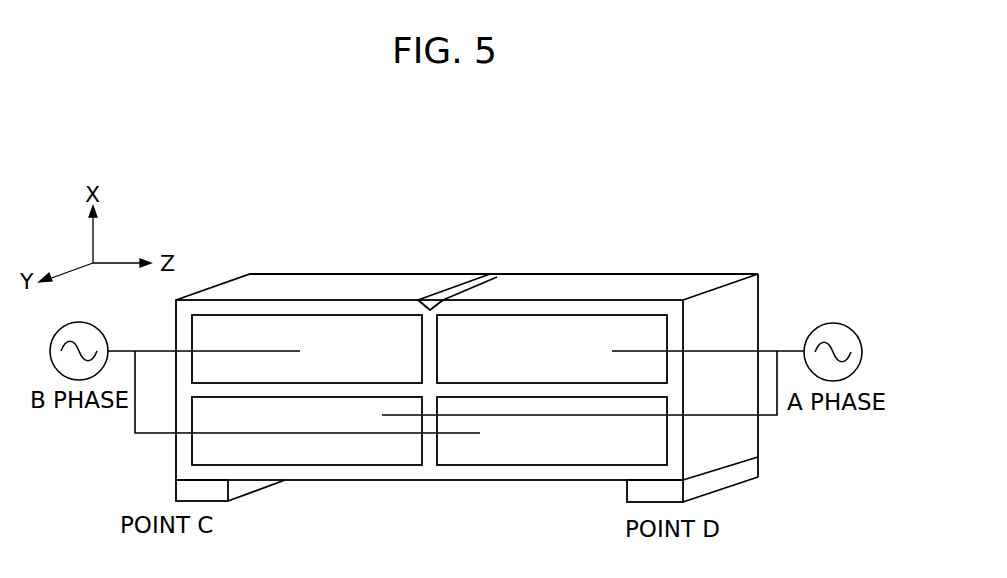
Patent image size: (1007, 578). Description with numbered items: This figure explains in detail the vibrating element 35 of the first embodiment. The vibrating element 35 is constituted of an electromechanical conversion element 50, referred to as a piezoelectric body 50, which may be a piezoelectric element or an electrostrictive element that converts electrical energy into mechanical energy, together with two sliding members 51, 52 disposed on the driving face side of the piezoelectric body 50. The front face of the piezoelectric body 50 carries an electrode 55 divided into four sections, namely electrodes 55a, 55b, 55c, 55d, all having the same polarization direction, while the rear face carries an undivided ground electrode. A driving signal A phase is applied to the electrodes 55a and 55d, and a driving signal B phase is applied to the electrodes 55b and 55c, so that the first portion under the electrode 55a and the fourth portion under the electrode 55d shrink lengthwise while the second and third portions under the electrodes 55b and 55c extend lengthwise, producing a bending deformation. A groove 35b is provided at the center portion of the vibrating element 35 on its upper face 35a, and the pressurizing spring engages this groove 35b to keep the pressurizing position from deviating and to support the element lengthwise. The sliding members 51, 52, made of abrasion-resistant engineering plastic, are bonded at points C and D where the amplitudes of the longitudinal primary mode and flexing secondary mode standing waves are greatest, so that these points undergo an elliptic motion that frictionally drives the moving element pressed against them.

The vibrating element 35 is at (472, 355).
The top surface of vibrating body 35a is at (397, 288).
The groove 35b is at (493, 280).
The electromechanical conversion element 50 is at (341, 299).
The sliding member 51 is at (215, 493).
The sliding member 52 is at (718, 485).
The electrode 55 is at (433, 379).
The electrode 55a is at (565, 335).
The electrode 55b is at (572, 457).
The electrode 55c is at (250, 335).
The electrode 55d is at (352, 455).